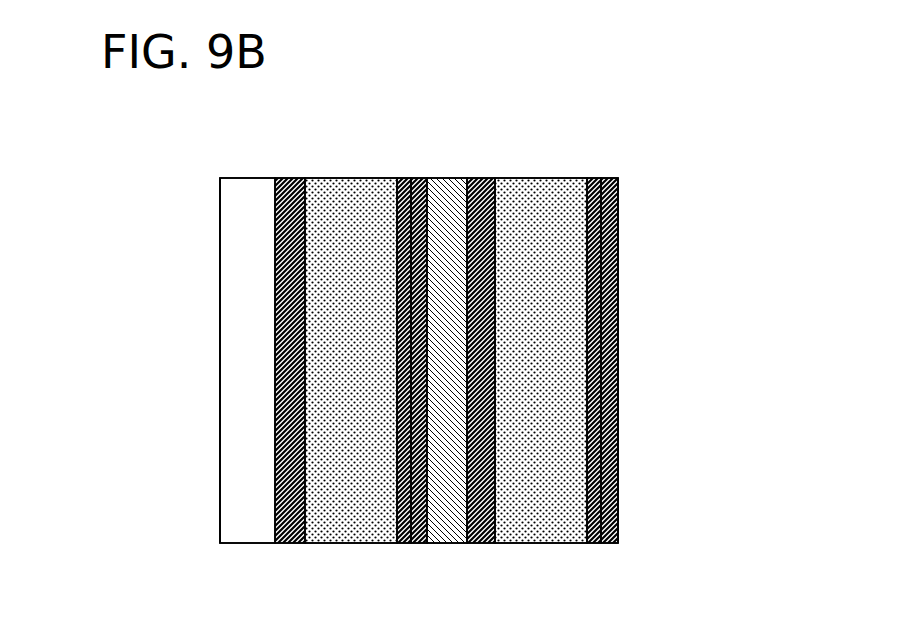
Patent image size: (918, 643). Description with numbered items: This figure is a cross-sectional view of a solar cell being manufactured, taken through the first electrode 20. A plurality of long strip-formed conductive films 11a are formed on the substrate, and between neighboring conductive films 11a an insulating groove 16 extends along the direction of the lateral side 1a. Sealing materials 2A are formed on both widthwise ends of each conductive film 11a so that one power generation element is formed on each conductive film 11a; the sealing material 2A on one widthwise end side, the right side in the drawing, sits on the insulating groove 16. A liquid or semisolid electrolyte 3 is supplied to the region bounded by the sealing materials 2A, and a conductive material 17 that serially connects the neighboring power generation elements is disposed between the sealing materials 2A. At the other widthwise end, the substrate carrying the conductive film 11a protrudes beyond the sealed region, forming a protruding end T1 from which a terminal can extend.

The first electrode 20 is at (660, 177).
The conductive film 11a is at (238, 520).
The lateral side 1a is at (212, 322).
The protruding end T1 is at (227, 438).
The electrolyte 3 is at (338, 518).
The sealing material 2A is at (282, 180).
The insulating groove 16 is at (396, 510).
The conductive material 17 is at (435, 537).